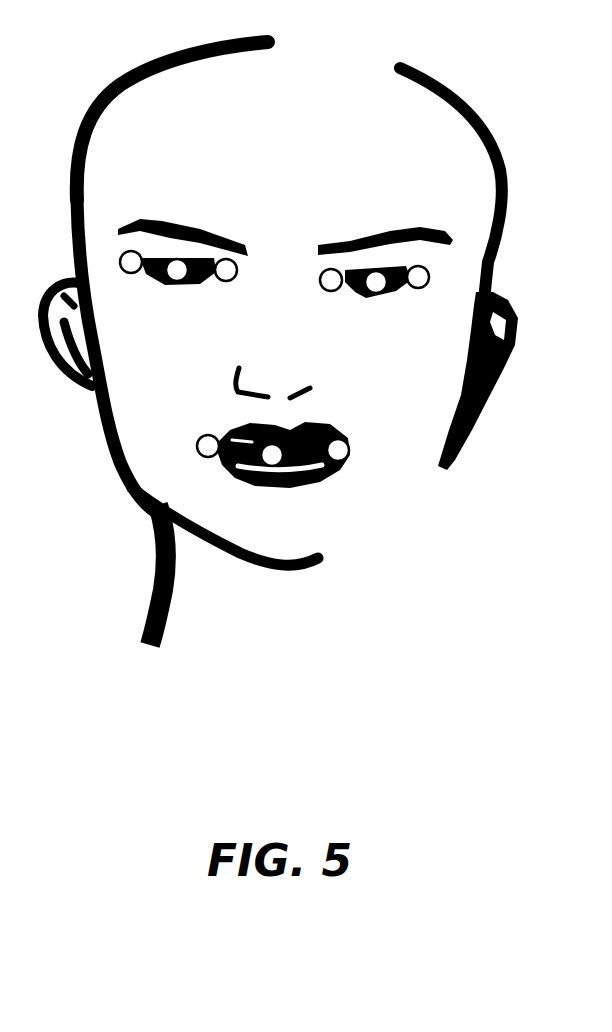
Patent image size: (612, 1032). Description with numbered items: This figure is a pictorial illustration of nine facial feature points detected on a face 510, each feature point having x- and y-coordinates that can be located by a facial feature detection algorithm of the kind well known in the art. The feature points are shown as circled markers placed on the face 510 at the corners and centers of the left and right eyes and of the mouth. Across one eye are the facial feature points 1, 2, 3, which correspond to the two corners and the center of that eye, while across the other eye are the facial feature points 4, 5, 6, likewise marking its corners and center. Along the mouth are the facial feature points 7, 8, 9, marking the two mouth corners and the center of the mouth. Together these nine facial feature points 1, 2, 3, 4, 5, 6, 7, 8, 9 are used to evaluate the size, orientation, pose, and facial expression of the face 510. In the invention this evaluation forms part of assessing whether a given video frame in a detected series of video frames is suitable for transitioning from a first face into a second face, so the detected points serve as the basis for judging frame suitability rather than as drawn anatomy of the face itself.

The face 510 is at (152, 64).
The facial feature point 1 is at (131, 262).
The facial feature point 2 is at (177, 270).
The facial feature point 3 is at (226, 270).
The facial feature point 4 is at (331, 280).
The facial feature point 5 is at (376, 282).
The facial feature point 6 is at (418, 277).
The facial feature point 7 is at (208, 446).
The facial feature point 8 is at (272, 455).
The facial feature point 9 is at (338, 450).